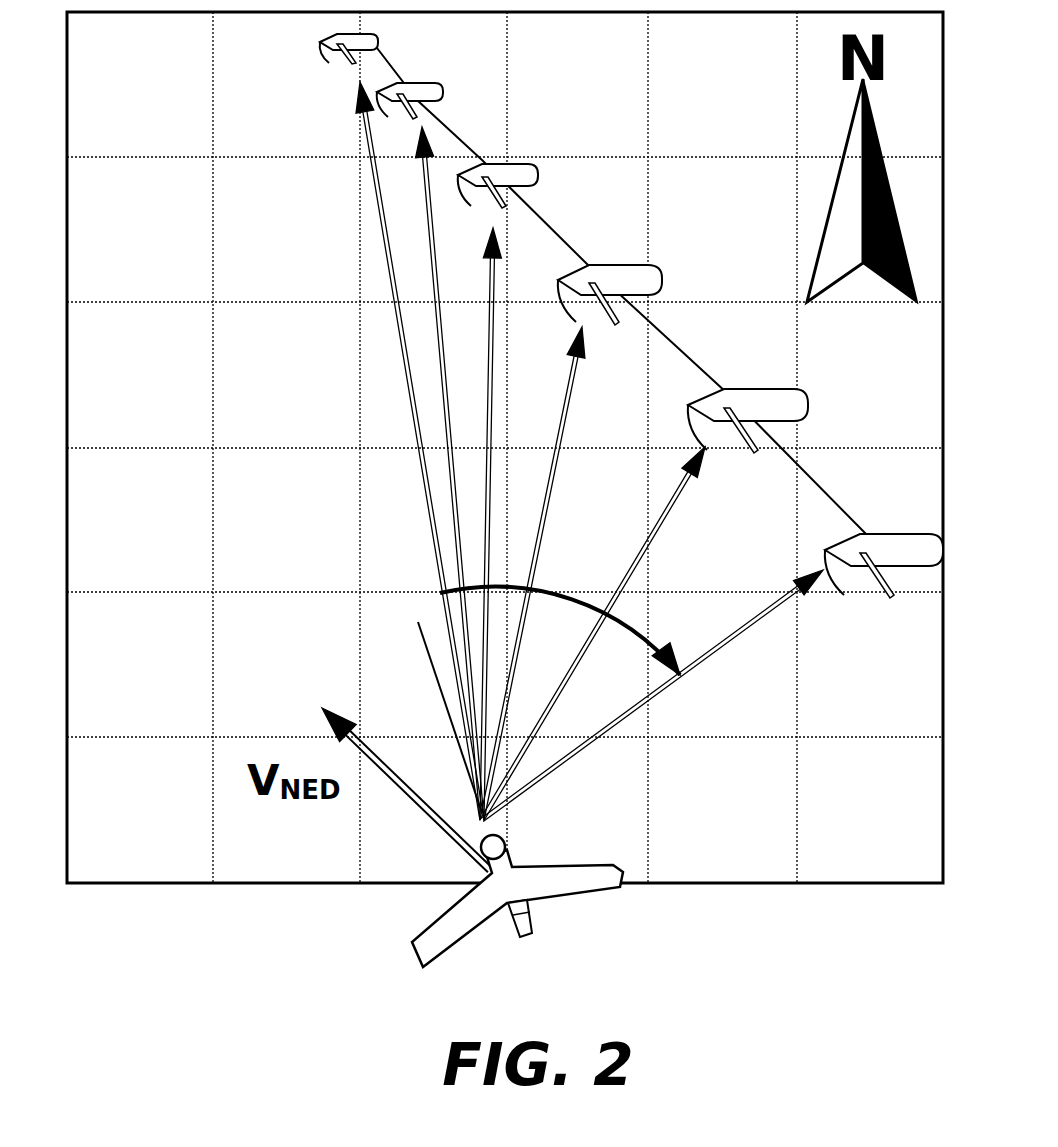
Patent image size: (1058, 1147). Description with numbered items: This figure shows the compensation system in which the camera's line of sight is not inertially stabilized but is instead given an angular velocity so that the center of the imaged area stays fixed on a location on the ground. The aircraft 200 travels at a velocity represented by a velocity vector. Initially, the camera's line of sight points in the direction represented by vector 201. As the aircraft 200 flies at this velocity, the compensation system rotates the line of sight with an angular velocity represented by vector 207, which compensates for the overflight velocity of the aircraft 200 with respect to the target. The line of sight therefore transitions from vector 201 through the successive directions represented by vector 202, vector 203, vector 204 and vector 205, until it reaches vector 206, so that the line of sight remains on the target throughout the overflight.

The aircraft 200 is at (517, 906).
The vector 201 is at (352, 103).
The vector 202 is at (437, 140).
The vector 203 is at (508, 243).
The vector 204 is at (590, 342).
The vector 205 is at (708, 462).
The vector 206 is at (817, 593).
The vector 207 is at (635, 643).